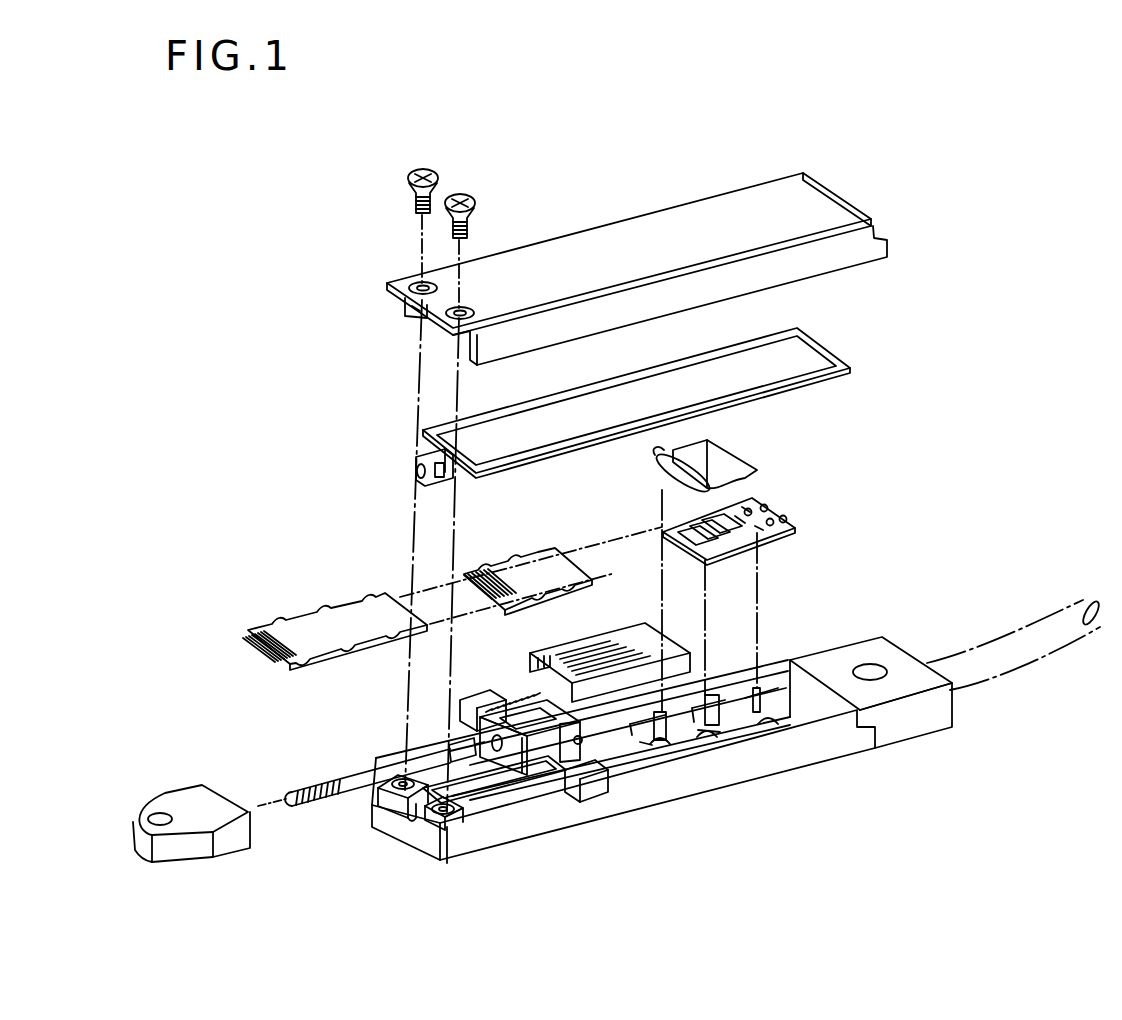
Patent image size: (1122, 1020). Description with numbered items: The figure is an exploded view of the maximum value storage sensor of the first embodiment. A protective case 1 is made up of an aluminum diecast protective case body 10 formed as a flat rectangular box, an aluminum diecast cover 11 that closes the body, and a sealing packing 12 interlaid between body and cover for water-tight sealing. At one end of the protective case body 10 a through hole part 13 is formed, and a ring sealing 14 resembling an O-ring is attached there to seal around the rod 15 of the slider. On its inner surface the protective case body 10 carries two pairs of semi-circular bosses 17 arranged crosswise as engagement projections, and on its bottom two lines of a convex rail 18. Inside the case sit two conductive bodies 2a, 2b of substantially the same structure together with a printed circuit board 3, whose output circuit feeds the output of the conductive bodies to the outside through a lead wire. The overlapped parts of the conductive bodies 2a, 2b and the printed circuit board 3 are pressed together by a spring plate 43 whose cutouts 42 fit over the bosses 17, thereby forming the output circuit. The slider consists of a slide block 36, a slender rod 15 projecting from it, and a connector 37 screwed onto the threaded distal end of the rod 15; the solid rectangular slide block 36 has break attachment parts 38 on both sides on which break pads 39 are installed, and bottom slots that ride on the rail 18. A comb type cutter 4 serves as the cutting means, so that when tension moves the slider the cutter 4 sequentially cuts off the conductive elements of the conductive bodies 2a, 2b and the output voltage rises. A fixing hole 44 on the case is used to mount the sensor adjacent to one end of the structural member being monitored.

The protective case 1 is at (977, 388).
The protective case body 10 is at (782, 672).
The cover 11 is at (862, 253).
The sealing packing 12 is at (668, 356).
The through hole part 13 is at (398, 825).
The ring sealing 14 is at (416, 457).
The rod 15 is at (378, 768).
The semi-circular bosses 17 is at (755, 700).
The rail 18 is at (508, 800).
The conductive body 2a is at (517, 572).
The conductive body 2b is at (300, 628).
The printed circuit board 3 is at (772, 507).
The slide block 36 is at (522, 720).
The connector 37 is at (193, 800).
The break attachment parts 38 is at (542, 760).
The break pads 39 is at (482, 692).
The comb type cutter 4 is at (613, 688).
The cutouts 42 is at (655, 457).
The spring plate 43 is at (718, 467).
The fixing hole 44 is at (872, 666).